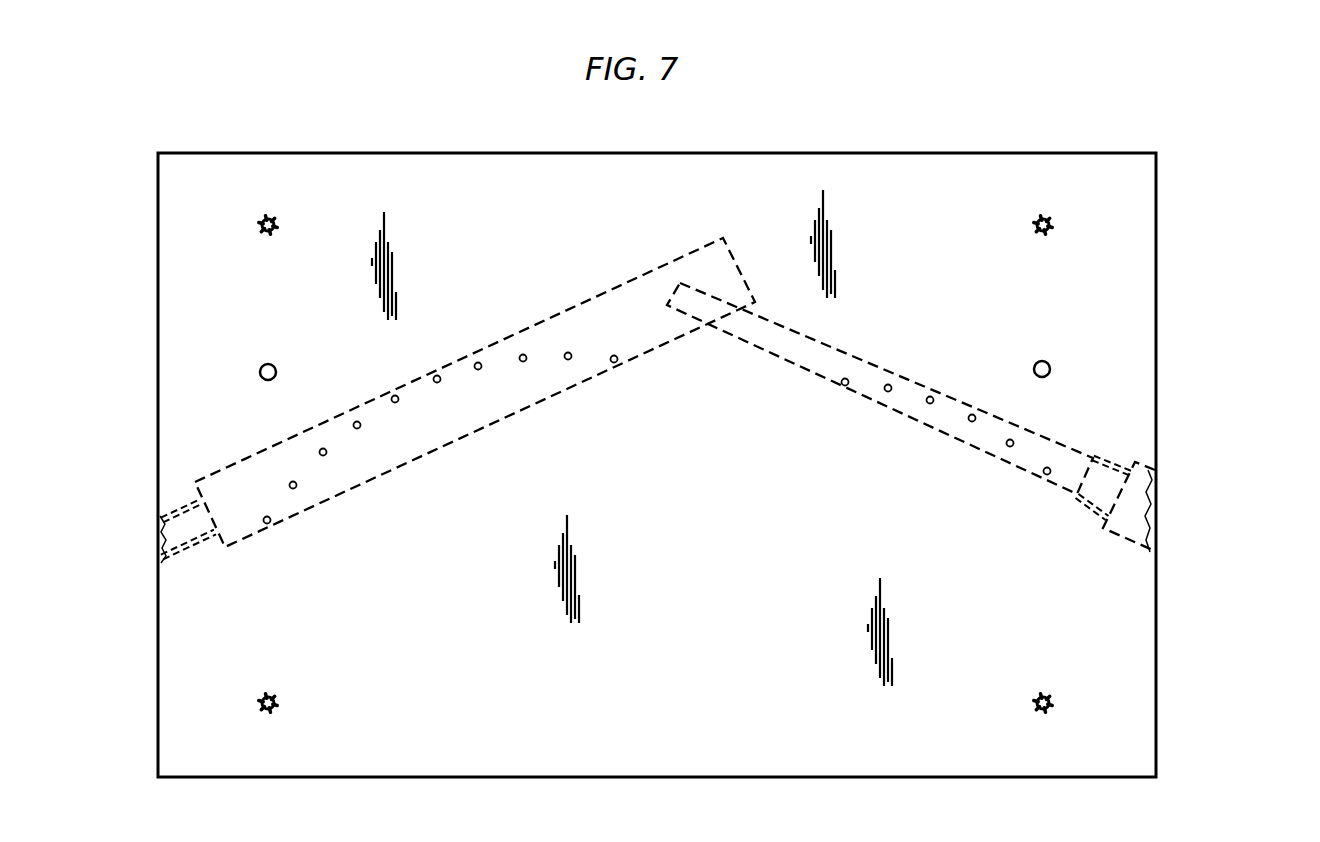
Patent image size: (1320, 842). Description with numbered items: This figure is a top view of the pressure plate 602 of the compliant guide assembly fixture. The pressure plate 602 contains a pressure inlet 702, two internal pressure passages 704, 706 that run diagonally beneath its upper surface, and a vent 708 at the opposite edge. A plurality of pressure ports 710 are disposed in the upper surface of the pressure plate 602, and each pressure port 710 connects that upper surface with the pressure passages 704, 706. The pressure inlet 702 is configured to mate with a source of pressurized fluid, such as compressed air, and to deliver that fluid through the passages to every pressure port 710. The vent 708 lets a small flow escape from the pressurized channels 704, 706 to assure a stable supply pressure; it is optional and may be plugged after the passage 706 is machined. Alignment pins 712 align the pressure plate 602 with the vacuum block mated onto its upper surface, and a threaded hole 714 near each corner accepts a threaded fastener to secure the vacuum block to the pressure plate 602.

The pressure plate 602 is at (158, 316).
The pressure inlet 702 is at (1158, 499).
The pressure passage 704 is at (933, 427).
The pressure passage 706 is at (448, 443).
The vent 708 is at (158, 533).
The pressure port 710 is at (568, 359).
The alignment pin 712 is at (276, 366).
The threaded hole 714 is at (277, 697).